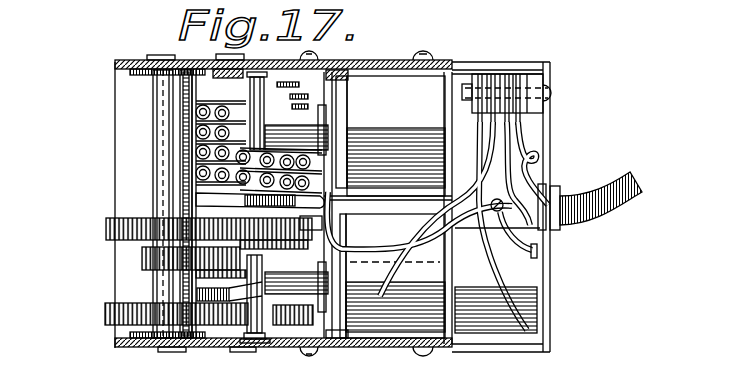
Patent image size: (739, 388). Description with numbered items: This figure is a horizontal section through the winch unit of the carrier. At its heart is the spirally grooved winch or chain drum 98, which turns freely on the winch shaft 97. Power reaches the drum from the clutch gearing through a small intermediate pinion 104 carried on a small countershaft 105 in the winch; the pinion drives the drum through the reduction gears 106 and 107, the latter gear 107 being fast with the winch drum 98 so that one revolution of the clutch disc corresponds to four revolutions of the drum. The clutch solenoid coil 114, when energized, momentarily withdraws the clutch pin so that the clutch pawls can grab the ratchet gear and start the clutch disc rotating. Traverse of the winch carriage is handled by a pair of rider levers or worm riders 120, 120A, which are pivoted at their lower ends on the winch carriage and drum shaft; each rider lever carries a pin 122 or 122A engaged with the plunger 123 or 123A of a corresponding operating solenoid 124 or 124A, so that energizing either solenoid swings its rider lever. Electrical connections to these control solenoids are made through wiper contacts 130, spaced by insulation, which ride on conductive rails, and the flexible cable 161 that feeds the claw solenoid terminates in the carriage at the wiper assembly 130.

The winch shaft 97 is at (236, 343).
The winch drum 98 is at (282, 210).
The intermediate pinion 104 is at (145, 256).
The countershaft 105 is at (155, 104).
The reduction gear 106 is at (110, 228).
The reduction gear 107 is at (322, 223).
The clutch solenoid coil 114 is at (532, 278).
The rider lever 120 is at (230, 72).
The rider lever 120A is at (218, 338).
The pin 122 is at (256, 117).
The pin 122A is at (256, 264).
The plunger 123 is at (319, 118).
The plunger 123A is at (317, 290).
The operating solenoid 124 is at (423, 127).
The operating solenoid 124A is at (385, 318).
The wiper contacts 130 is at (497, 72).
The flexible cable 161 is at (600, 192).